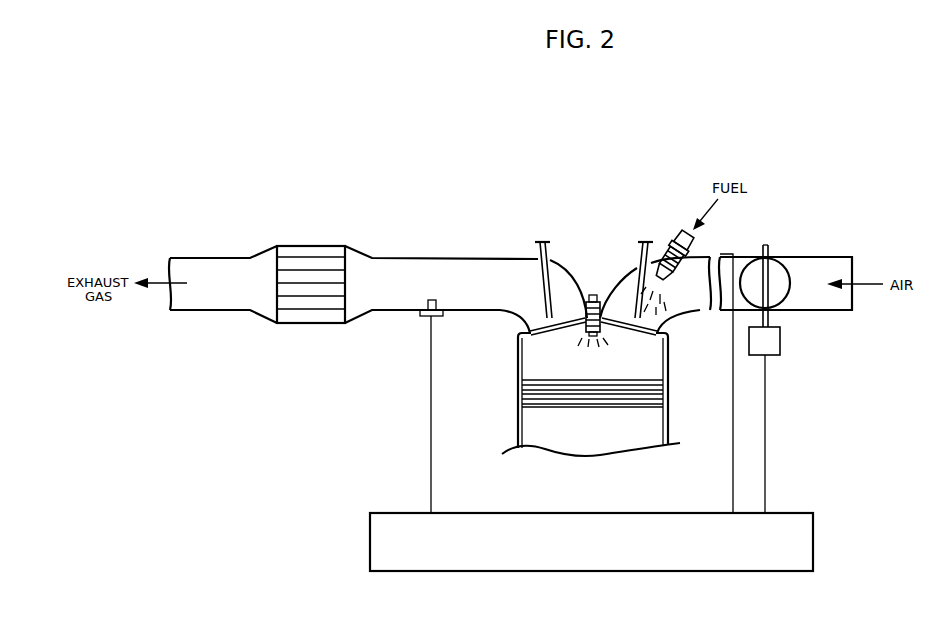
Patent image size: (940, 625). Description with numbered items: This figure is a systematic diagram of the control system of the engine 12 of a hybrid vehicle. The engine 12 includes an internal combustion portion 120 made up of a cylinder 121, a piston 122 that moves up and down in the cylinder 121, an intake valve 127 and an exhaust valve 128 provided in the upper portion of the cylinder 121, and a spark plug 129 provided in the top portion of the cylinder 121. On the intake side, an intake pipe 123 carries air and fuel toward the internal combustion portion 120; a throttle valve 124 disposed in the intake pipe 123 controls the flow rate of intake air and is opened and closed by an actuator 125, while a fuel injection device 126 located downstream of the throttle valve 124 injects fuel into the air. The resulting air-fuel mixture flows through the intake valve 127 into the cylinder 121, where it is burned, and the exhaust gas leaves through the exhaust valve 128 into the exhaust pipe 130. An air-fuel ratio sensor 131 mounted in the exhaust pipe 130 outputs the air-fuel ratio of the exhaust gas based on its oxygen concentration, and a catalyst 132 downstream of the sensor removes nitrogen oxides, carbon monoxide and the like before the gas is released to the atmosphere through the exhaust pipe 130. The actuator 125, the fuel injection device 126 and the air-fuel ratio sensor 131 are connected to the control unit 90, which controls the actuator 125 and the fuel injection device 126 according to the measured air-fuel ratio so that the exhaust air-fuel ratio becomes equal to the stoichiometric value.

The engine 12 is at (492, 184).
The control unit 90 is at (813, 541).
The internal combustion portion 120 is at (528, 460).
The cylinder 121 is at (516, 353).
The piston 122 is at (630, 380).
The intake pipe 123 is at (825, 257).
The throttle valve 124 is at (792, 293).
The actuator 125 is at (781, 345).
The fuel injection device 126 is at (670, 258).
The intake valve 127 is at (640, 249).
The exhaust valve 128 is at (548, 240).
The spark plug 129 is at (593, 293).
The exhaust pipe 130 is at (462, 254).
The air-fuel ratio sensor 131 is at (424, 300).
The catalyst 132 is at (322, 245).